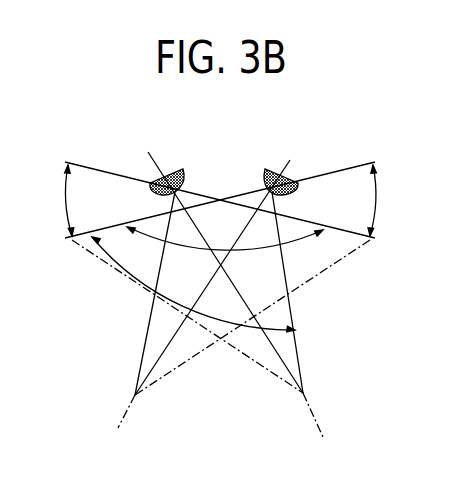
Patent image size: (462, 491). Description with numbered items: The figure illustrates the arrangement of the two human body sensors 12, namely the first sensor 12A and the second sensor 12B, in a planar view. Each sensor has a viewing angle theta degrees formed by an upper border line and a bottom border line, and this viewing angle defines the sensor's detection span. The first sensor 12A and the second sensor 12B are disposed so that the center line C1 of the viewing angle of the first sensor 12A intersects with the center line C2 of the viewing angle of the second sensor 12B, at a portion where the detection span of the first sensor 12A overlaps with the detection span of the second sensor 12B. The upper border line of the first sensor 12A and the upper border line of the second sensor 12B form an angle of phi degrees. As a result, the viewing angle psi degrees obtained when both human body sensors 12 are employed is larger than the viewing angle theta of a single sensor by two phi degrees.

The human body sensors 12 is at (224, 141).
The first sensor 12A is at (178, 168).
The second sensor 12B is at (266, 159).
The center line of the viewing angle of the first sensor C1 is at (300, 400).
The center line of the viewing angle of the second sensor C2 is at (137, 400).